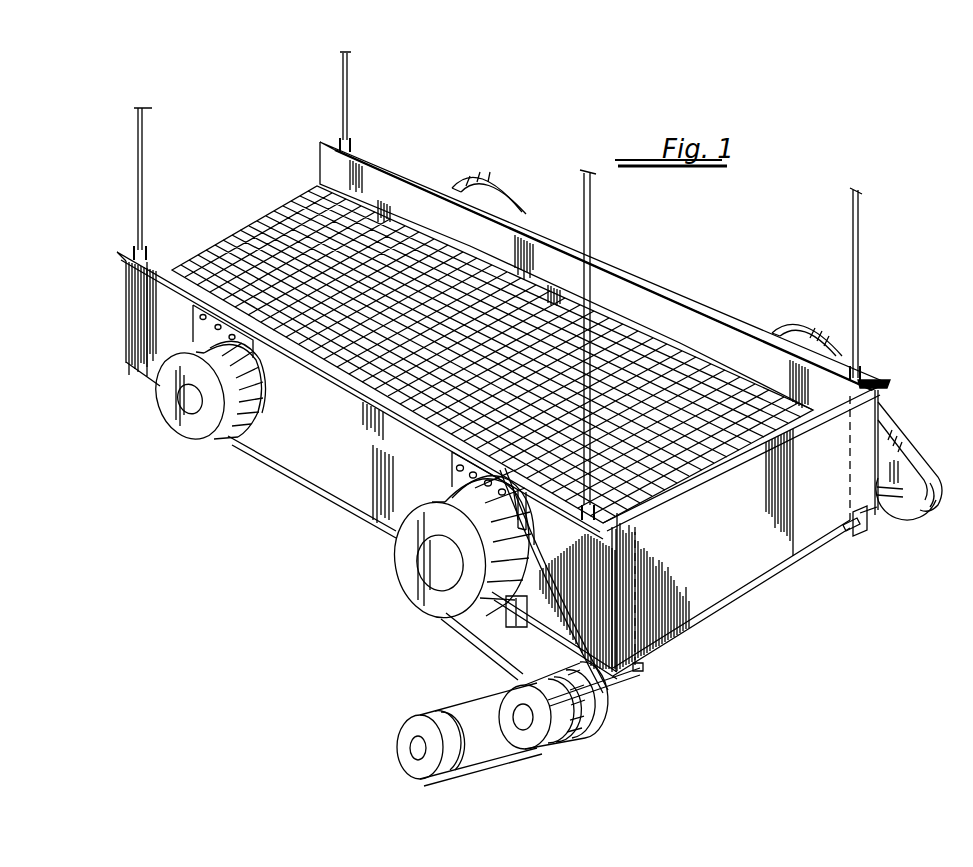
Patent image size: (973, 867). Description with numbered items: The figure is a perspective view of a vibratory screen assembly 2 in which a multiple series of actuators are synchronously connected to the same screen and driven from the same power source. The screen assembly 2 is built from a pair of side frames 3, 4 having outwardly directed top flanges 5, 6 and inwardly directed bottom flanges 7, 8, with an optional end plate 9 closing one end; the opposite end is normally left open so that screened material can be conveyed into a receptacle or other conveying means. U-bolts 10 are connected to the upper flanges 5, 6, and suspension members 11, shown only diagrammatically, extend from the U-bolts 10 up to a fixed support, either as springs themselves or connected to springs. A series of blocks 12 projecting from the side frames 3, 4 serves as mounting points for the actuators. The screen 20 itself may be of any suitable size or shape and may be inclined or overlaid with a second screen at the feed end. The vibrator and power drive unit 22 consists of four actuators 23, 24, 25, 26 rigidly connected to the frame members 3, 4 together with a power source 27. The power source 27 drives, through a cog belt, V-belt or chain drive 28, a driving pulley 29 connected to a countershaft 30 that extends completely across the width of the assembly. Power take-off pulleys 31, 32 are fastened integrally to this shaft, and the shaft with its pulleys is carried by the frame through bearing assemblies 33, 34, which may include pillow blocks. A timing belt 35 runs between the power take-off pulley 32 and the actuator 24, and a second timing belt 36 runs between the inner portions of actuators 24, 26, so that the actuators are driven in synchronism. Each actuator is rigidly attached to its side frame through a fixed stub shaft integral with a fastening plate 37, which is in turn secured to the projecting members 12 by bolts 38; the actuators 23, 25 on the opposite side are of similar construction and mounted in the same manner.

The screen assembly 2 is at (866, 283).
The side frame 3 is at (628, 288).
The side frame 4 is at (343, 407).
The top flange 5 is at (698, 298).
The top flange 6 is at (418, 425).
The bottom flange 7 is at (860, 530).
The bottom flange 8 is at (643, 666).
The end plate 9 is at (818, 530).
The U-bolts 10 is at (866, 374).
The suspension members 11 is at (852, 225).
The blocks 12 is at (521, 628).
The screen 20 is at (251, 216).
The vibrator and power drive unit 22 is at (401, 712).
The actuator 23 is at (812, 326).
The actuator 24 is at (423, 593).
The actuator 25 is at (506, 192).
The actuator 26 is at (201, 428).
The power source 27 is at (418, 768).
The chain drive 28 is at (490, 764).
The driving pulley 29 is at (537, 745).
The countershaft 30 is at (897, 510).
The power take-off pulley 31 is at (940, 508).
The power take-off pulley 32 is at (587, 719).
The bearing assembly 33 is at (857, 532).
The bearing assembly 34 is at (630, 676).
The timing belt 35 is at (470, 640).
The second timing belt 36 is at (296, 482).
The fastening plate 37 is at (526, 508).
The bolts 38 is at (452, 468).